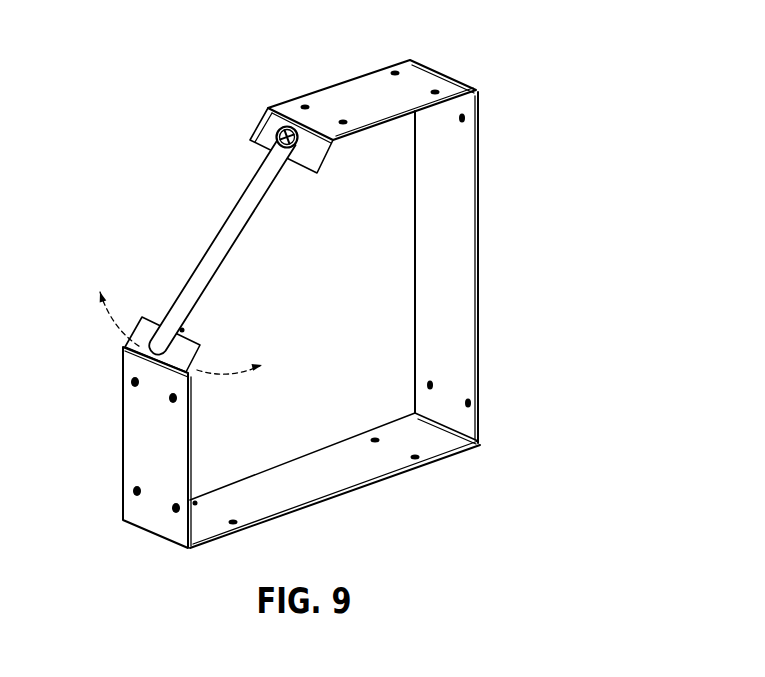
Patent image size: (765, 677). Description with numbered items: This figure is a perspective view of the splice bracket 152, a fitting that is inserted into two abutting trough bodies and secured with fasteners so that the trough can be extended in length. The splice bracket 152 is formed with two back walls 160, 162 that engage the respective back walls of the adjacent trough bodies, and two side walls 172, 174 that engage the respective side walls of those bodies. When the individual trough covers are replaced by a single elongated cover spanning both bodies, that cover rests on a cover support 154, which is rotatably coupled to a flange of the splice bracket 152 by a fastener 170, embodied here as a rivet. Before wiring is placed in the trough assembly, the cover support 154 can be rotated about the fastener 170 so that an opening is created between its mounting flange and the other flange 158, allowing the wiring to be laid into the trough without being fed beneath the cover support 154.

The splice bracket 152 is at (332, 278).
The cover support 154 is at (217, 237).
The flange 158 is at (197, 362).
The back wall 160 is at (482, 282).
The back wall 162 is at (388, 477).
The fastener 170 is at (274, 128).
The side wall 172 is at (383, 119).
The side wall 174 is at (187, 466).